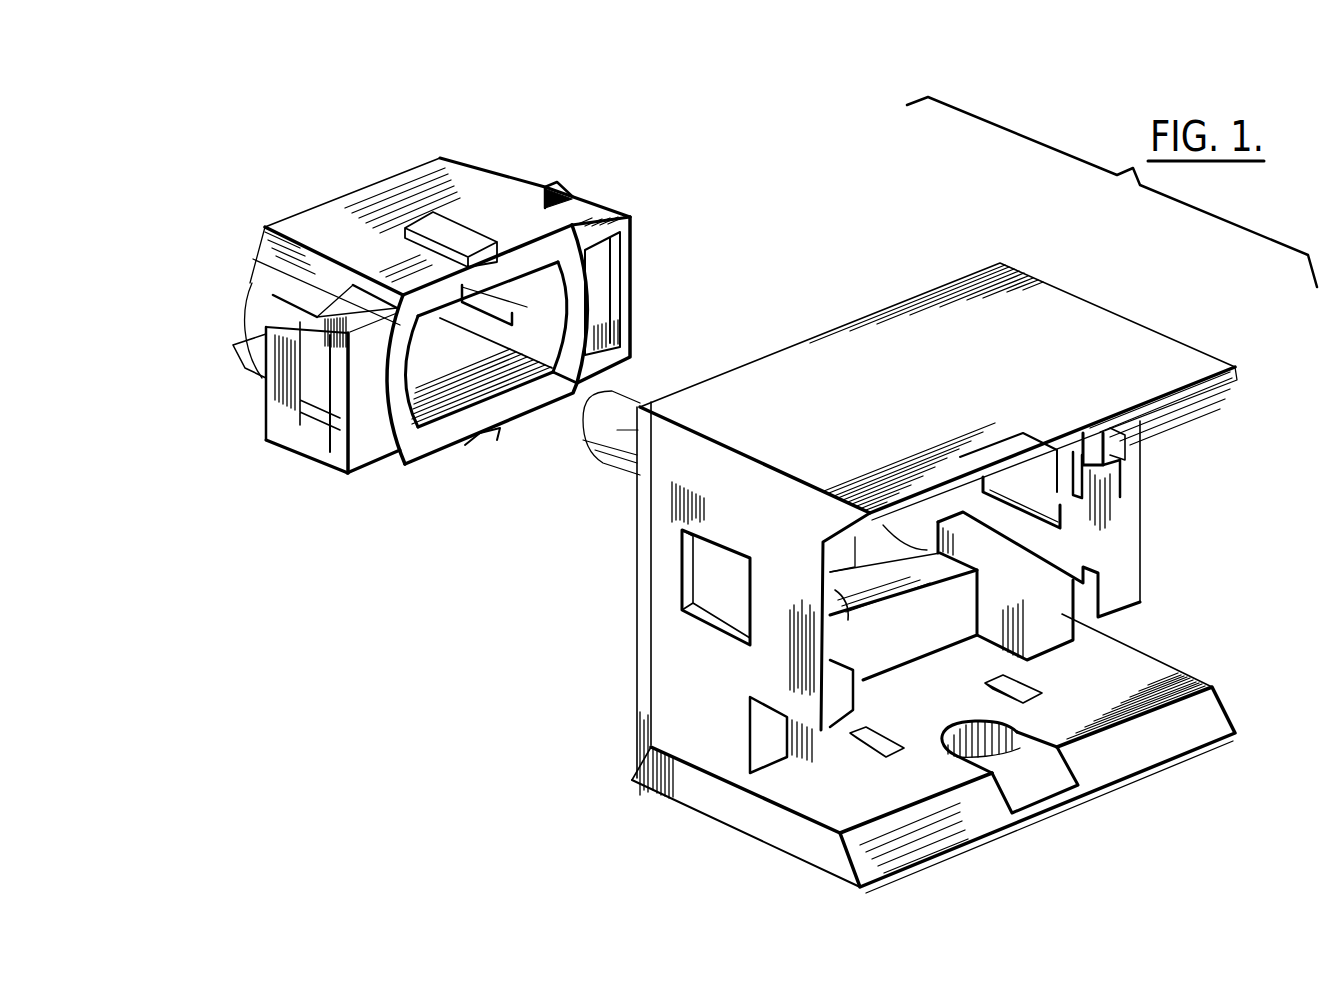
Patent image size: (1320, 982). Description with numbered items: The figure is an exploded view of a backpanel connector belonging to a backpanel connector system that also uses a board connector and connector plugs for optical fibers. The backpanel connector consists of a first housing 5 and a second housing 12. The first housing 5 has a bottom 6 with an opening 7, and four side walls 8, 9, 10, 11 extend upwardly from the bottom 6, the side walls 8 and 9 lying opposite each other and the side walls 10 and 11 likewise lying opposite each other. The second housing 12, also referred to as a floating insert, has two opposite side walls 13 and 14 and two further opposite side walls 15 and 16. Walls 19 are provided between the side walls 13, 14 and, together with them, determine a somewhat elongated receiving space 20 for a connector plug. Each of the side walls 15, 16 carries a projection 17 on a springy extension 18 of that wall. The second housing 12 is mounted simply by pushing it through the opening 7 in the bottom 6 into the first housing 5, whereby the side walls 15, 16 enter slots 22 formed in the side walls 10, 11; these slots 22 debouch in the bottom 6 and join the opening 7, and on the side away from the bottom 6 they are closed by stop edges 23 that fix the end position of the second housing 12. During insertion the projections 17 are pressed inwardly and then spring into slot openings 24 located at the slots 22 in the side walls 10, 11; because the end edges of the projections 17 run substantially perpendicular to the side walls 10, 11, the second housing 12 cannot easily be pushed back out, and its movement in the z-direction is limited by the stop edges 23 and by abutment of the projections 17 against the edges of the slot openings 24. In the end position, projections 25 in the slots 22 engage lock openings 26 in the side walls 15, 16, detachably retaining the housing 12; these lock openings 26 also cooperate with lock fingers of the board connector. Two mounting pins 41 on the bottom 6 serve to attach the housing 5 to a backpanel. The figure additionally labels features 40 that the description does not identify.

The first housing 5 is at (1076, 347).
The bottom 6 is at (941, 637).
The opening 7 is at (876, 557).
The side wall 8 is at (1158, 357).
The side wall 9 is at (873, 850).
The side wall 10 is at (700, 640).
The side wall 11 is at (1142, 504).
The second housing 12 is at (338, 187).
The side wall 13 is at (390, 210).
The side wall 14 is at (523, 405).
The side wall 15 is at (332, 453).
The side wall 16 is at (630, 243).
The projection 17 is at (283, 393).
The springy extension 18 is at (553, 185).
The walls 19 is at (577, 287).
The receiving space 20 is at (438, 363).
The slot 22 is at (1107, 488).
The stop edge 23 is at (1125, 440).
The slot opening 24 is at (712, 567).
The projection 25 is at (1087, 478).
The lock opening 26 is at (597, 253).
The guide rib 40 is at (452, 237).
The mounting pin 41 is at (600, 457).